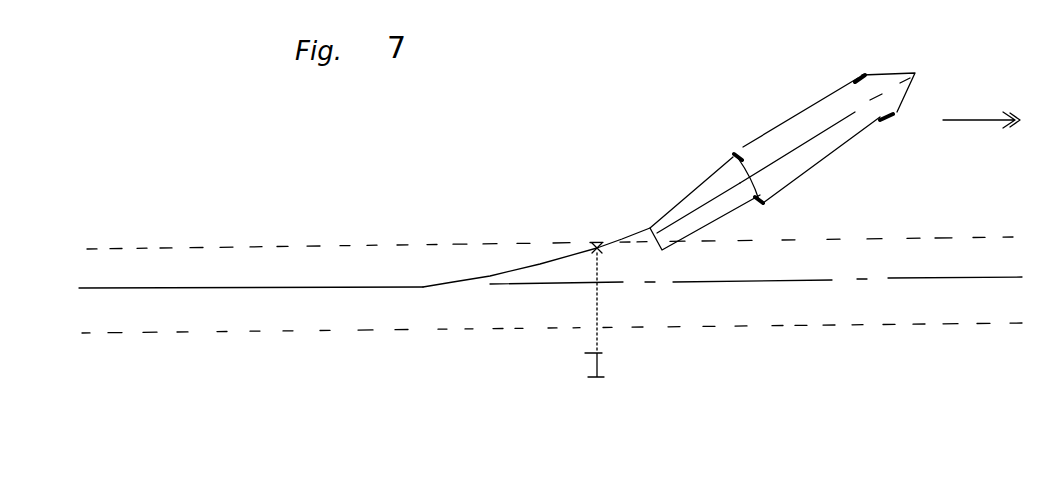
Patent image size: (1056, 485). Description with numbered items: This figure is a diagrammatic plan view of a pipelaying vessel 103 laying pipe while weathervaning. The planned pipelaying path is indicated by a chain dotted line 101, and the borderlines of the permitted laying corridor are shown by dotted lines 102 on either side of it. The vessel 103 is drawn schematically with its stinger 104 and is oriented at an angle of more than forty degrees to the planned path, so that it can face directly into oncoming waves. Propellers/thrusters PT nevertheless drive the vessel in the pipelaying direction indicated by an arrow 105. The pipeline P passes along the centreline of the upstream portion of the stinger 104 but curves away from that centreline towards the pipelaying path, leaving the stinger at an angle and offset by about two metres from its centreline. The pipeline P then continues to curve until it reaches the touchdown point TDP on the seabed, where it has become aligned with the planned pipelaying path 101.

The planned pipelaying path 101 is at (948, 277).
The dotted lines 102 is at (232, 250).
The vessel 103 is at (792, 127).
The stinger 104 is at (700, 202).
The arrow 105 is at (973, 118).
The pipeline P is at (154, 287).
The touchdown point TDP is at (434, 275).
The propellers/thrusters PT is at (756, 198).